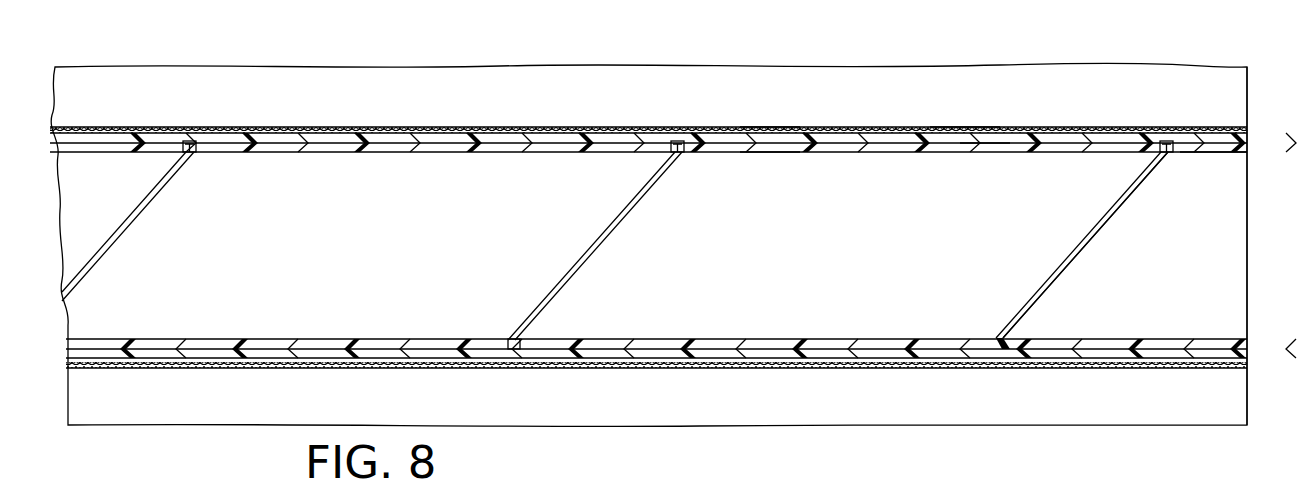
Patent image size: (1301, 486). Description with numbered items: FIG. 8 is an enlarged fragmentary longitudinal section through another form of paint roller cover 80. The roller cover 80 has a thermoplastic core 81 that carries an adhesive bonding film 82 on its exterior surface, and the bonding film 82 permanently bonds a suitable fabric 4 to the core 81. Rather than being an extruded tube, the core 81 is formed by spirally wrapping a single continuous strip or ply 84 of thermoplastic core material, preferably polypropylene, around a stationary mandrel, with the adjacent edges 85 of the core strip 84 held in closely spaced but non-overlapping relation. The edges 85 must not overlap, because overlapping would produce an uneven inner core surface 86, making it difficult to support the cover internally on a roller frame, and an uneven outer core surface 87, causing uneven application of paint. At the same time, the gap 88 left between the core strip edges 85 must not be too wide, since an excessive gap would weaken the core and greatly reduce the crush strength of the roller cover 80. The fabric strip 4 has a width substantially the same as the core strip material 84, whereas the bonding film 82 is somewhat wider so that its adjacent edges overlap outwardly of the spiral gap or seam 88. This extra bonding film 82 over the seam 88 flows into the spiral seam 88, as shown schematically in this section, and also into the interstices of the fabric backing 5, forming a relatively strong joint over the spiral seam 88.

The fabric 4 is at (855, 96).
The fabric backing 5 is at (964, 128).
The paint roller cover 80 is at (1196, 55).
The thermoplastic core 81 is at (1207, 152).
The adhesive bonding film 82 is at (184, 146).
The core strip 84 is at (990, 150).
The edges of the core strip 85 is at (1104, 218).
The inner core surface 86 is at (758, 165).
The outer core surface 87 is at (758, 165).
The gap or spiral seam 88 is at (1072, 257).